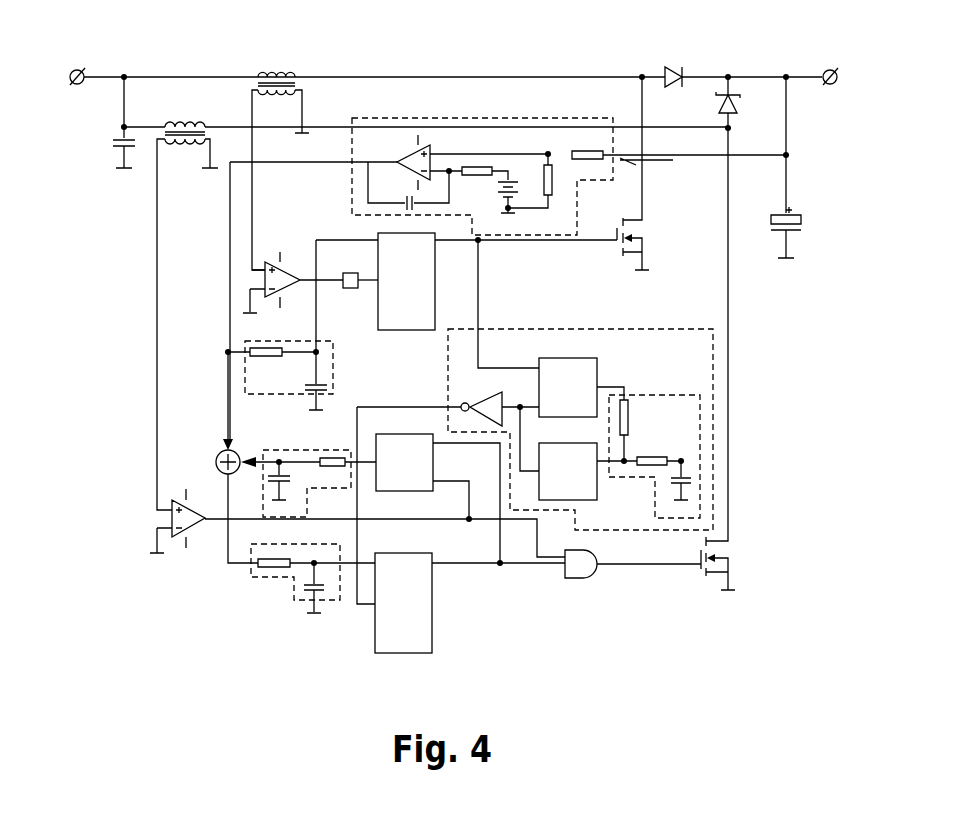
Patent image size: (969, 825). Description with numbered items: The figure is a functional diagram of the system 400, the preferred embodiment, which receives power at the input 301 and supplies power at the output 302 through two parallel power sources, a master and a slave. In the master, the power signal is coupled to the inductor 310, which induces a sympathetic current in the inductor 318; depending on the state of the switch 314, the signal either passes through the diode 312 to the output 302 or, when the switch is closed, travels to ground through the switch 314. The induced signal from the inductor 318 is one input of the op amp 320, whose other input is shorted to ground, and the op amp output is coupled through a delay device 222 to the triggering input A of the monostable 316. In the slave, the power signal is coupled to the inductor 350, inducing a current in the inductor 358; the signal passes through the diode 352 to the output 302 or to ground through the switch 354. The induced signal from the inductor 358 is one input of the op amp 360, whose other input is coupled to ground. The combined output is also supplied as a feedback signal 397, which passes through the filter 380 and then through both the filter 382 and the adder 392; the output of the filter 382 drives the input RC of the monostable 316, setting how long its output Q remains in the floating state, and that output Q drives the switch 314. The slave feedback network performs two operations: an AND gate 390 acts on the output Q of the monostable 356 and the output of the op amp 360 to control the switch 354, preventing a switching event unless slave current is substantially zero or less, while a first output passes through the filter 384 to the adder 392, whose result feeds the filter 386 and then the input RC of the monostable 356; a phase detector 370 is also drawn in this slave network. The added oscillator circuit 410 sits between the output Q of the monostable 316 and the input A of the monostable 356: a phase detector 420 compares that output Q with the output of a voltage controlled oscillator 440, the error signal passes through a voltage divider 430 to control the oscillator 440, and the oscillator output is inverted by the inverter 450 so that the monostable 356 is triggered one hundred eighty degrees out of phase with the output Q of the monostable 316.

The system 400 is at (71, 34).
The input 301 is at (58, 88).
The output 302 is at (836, 92).
The inductor 310 is at (276, 69).
The inductor 318 is at (282, 180).
The inductor 350 is at (185, 117).
The inductor 358 is at (187, 324).
The diode 312 is at (672, 70).
The diode 352 is at (716, 104).
The filter 380 is at (372, 118).
The feedback signal 397 is at (653, 172).
The switch 314 is at (619, 254).
The op amp 320 is at (290, 284).
The delay element 222 is at (350, 289).
The monostable 316 is at (406, 331).
The filter 382 is at (272, 396).
The adder 392 is at (216, 455).
The filter 384 is at (303, 487).
The op amp 360 is at (355, 533).
The filter 386 is at (262, 578).
The monostable 356 is at (418, 653).
The AND gate 390 is at (576, 580).
The switch 354 is at (729, 578).
The phase detector 370 is at (436, 462).
The inverter 450 is at (480, 394).
The phase detector 420 is at (603, 372).
The voltage divider 430 is at (680, 394).
The voltage controlled oscillator 440 is at (598, 493).
The oscillator circuit 410 is at (713, 382).